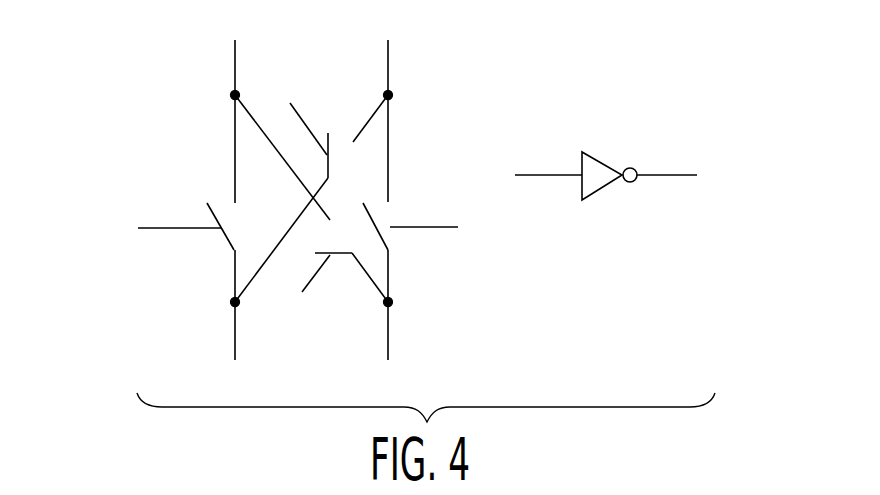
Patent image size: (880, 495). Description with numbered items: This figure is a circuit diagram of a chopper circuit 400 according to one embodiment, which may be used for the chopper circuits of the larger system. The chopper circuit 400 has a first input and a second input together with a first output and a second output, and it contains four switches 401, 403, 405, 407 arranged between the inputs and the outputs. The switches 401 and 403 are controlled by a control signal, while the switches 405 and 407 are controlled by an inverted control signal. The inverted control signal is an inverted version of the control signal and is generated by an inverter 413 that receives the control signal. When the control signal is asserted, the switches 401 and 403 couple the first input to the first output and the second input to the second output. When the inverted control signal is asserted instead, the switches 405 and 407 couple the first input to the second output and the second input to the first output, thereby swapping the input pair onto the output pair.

The chopper circuit 400 is at (458, 92).
The switch 401 is at (227, 238).
The switch 403 is at (385, 238).
The switch 405 is at (340, 257).
The switch 407 is at (328, 133).
The inverter 413 is at (600, 157).